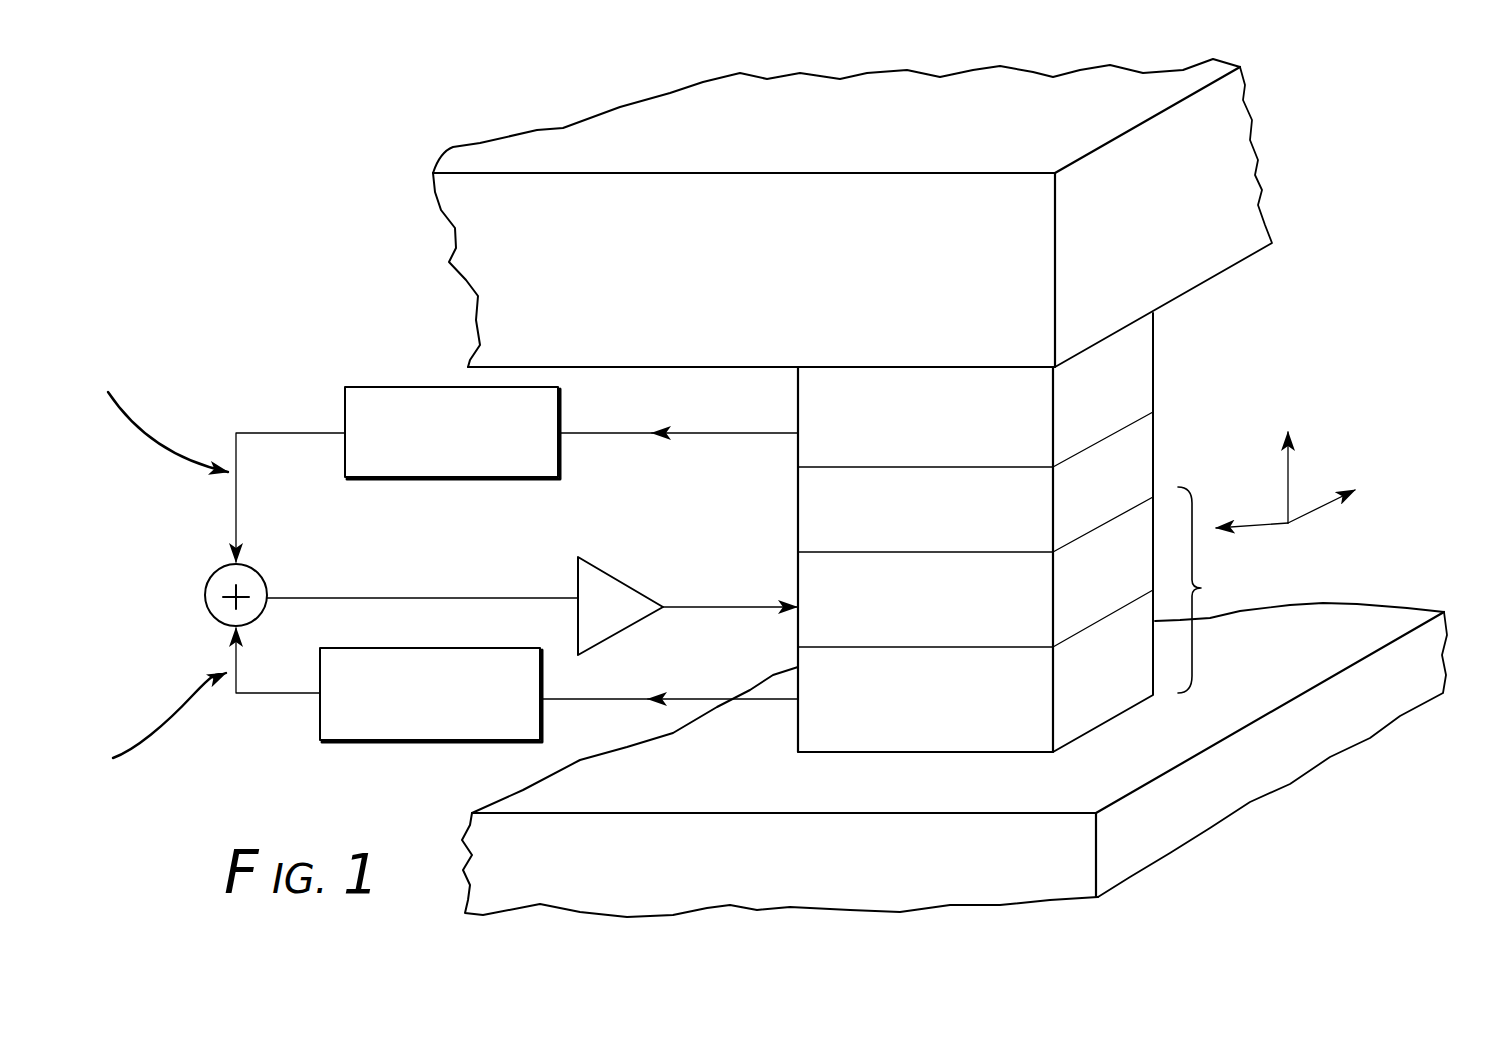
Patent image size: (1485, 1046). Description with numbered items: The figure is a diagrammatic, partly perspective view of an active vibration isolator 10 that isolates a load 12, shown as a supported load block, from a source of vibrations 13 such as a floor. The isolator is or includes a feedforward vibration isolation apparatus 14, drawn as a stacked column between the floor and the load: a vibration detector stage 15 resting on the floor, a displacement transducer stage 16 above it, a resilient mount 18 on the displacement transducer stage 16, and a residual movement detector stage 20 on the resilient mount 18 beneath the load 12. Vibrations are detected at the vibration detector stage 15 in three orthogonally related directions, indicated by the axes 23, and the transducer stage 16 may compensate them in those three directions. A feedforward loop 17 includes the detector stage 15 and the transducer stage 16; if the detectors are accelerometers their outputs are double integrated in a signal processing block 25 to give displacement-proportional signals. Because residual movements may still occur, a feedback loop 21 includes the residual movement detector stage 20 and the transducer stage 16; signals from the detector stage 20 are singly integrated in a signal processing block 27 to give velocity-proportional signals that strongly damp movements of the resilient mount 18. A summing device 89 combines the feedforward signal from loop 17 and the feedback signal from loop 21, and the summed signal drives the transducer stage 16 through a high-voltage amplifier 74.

The active vibration isolator 10 is at (793, 512).
The load 12 is at (830, 287).
The source of vibrations 13 is at (635, 877).
The feedforward vibration isolation apparatus 14 is at (1208, 590).
The vibration detector stage 15 is at (938, 717).
The displacement transducer stage 16 is at (945, 622).
The feedforward loop 17 is at (456, 644).
The resilient mount 18 is at (945, 532).
The residual movement detector stage 20 is at (952, 439).
The feedback loop 21 is at (501, 547).
The three orthogonally related directions 23 is at (1289, 483).
The double integration signal processing 25 is at (320, 669).
The single integration signal processing 27 is at (344, 480).
The high-voltage amplifier 74 is at (630, 632).
The summing device 89 is at (205, 594).